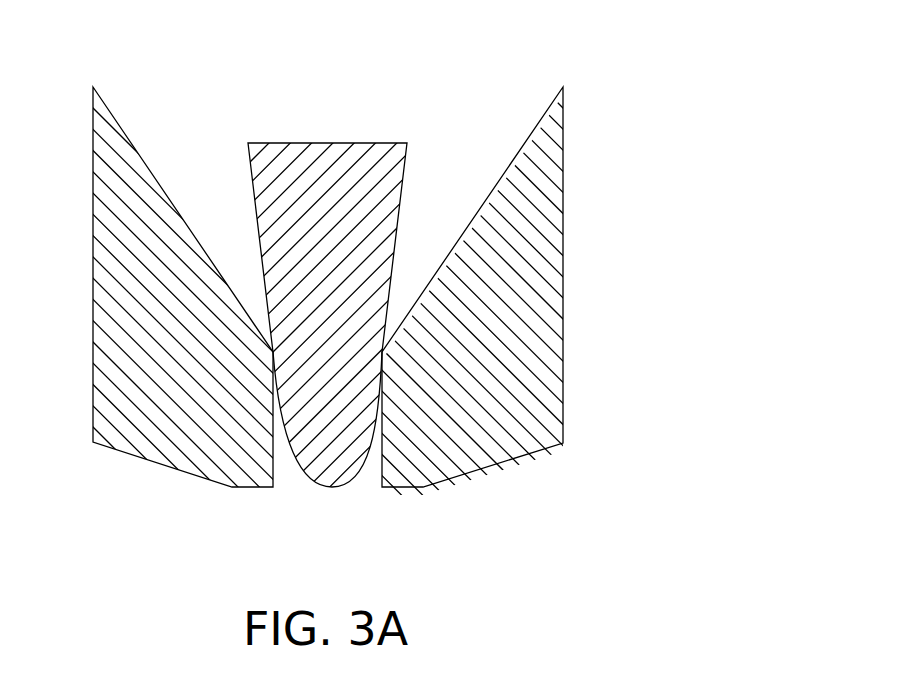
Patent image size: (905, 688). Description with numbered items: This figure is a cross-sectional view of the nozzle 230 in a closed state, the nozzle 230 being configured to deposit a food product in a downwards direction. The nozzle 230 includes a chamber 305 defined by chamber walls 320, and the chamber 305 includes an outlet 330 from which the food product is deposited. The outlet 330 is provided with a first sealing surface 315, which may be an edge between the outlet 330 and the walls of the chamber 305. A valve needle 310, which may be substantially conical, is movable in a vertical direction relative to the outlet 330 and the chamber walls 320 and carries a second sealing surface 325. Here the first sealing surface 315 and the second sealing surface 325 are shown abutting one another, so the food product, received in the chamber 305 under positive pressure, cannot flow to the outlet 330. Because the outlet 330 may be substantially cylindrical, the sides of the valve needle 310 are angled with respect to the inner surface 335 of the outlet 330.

The nozzle 230 is at (513, 38).
The chamber 305 is at (170, 127).
The valve needle 310 is at (370, 173).
The first sealing surface 315 is at (275, 350).
The chamber walls 320 is at (452, 344).
The second sealing surface 325 is at (380, 350).
The outlet 330 is at (285, 476).
The inner surface 335 is at (380, 468).